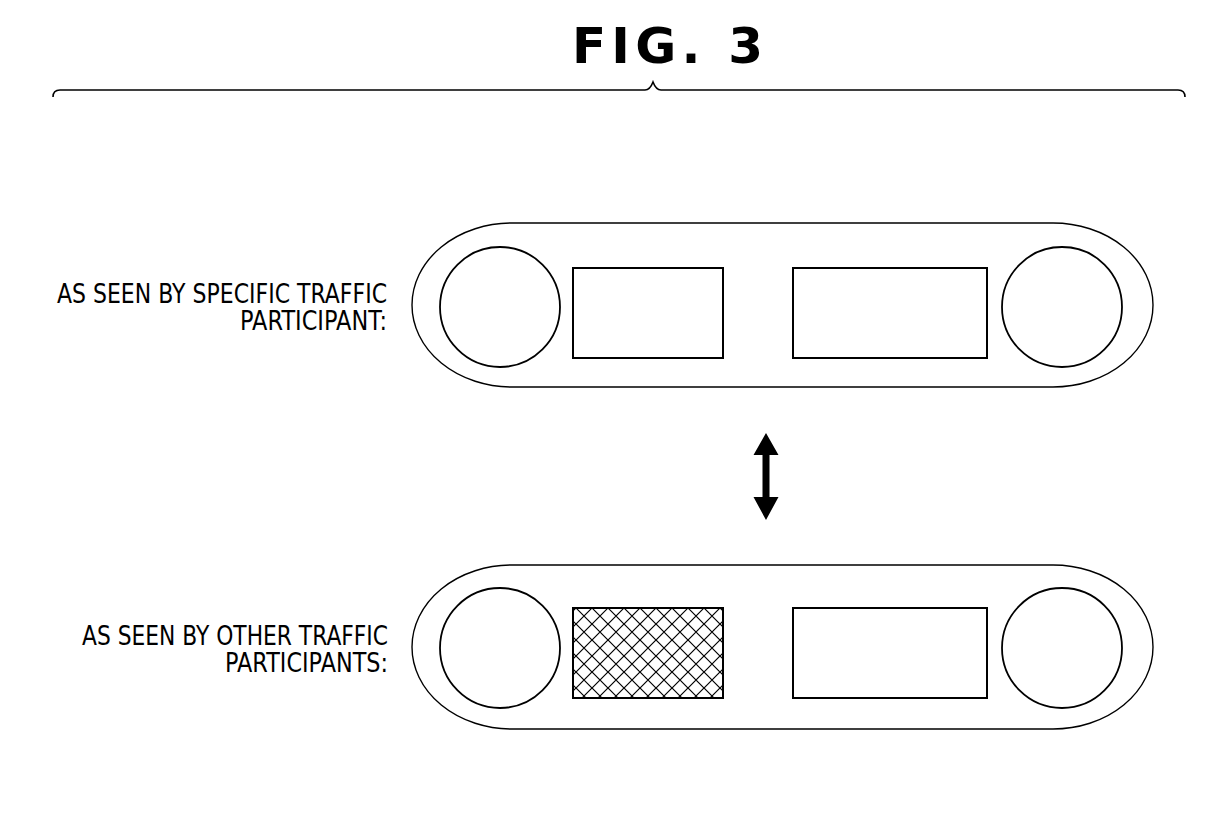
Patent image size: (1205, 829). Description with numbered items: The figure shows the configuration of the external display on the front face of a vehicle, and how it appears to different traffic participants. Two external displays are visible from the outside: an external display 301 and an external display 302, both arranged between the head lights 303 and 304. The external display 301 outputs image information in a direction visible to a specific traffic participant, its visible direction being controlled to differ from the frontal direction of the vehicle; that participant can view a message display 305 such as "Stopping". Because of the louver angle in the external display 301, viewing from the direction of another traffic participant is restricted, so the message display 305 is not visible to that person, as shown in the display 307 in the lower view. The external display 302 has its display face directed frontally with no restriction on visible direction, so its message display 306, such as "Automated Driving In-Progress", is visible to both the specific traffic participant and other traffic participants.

The external display 301 is at (610, 268).
The external display 302 is at (883, 268).
The head light 303 is at (497, 247).
The head light 304 is at (1062, 248).
The message display 305 is at (648, 342).
The message display 306 is at (967, 345).
The display 307 is at (648, 680).